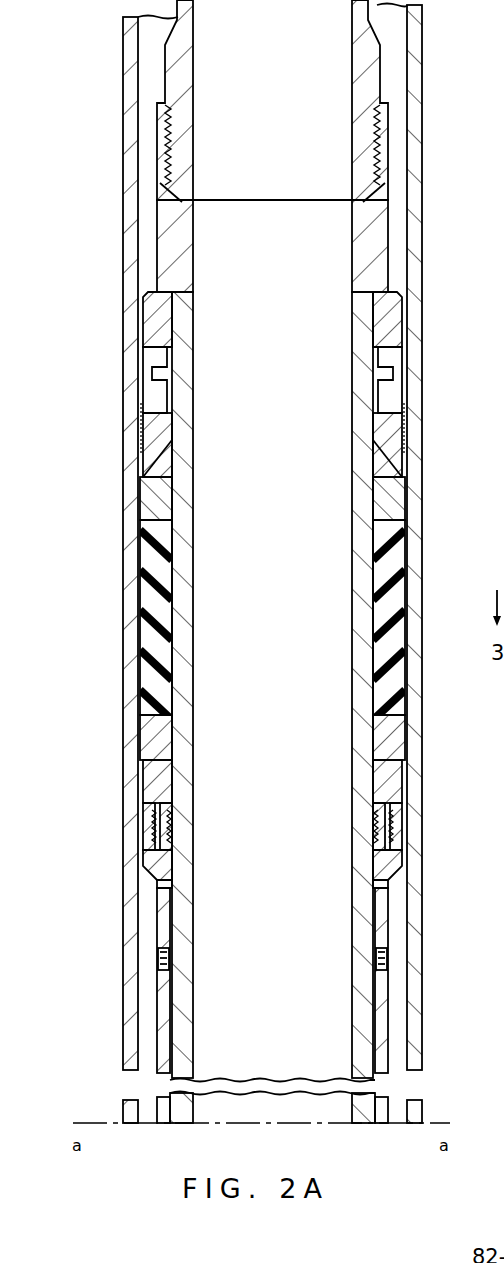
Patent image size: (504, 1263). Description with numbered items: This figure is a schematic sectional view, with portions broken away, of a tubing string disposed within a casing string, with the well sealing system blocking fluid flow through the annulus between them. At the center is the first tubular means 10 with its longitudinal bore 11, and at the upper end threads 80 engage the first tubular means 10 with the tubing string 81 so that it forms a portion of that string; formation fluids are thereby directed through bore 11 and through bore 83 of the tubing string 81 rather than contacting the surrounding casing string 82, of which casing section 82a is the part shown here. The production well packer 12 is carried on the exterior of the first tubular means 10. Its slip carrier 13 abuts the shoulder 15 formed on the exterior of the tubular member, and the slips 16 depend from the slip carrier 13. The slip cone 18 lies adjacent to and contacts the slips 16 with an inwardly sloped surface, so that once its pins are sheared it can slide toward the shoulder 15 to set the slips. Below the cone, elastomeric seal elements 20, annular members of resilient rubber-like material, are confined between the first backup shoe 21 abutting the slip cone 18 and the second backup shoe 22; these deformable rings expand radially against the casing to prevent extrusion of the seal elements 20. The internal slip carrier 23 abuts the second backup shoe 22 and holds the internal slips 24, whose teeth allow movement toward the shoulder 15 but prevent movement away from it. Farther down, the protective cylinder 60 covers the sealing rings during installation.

The first tubular means 10 is at (381, 258).
The longitudinal bore 11 is at (278, 529).
The production well packer 12 is at (280, 396).
The slip carrier 13 is at (383, 331).
The shoulder 15 is at (390, 304).
The slips 16 is at (397, 415).
The slip cone 18 is at (383, 454).
The elastomeric seal elements 20 is at (393, 598).
The first backup shoe 21 is at (392, 503).
The second backup shoe 22 is at (390, 737).
The internal slip carrier 23 is at (383, 786).
The internal slips 24 is at (377, 828).
The protective cylinder 60 is at (384, 924).
The threads 80 is at (360, 118).
The tubing string 81 is at (370, 40).
The casing string 82 is at (118, 141).
The casing section 82a is at (418, 122).
The bore of tubing string 83 is at (286, 80).